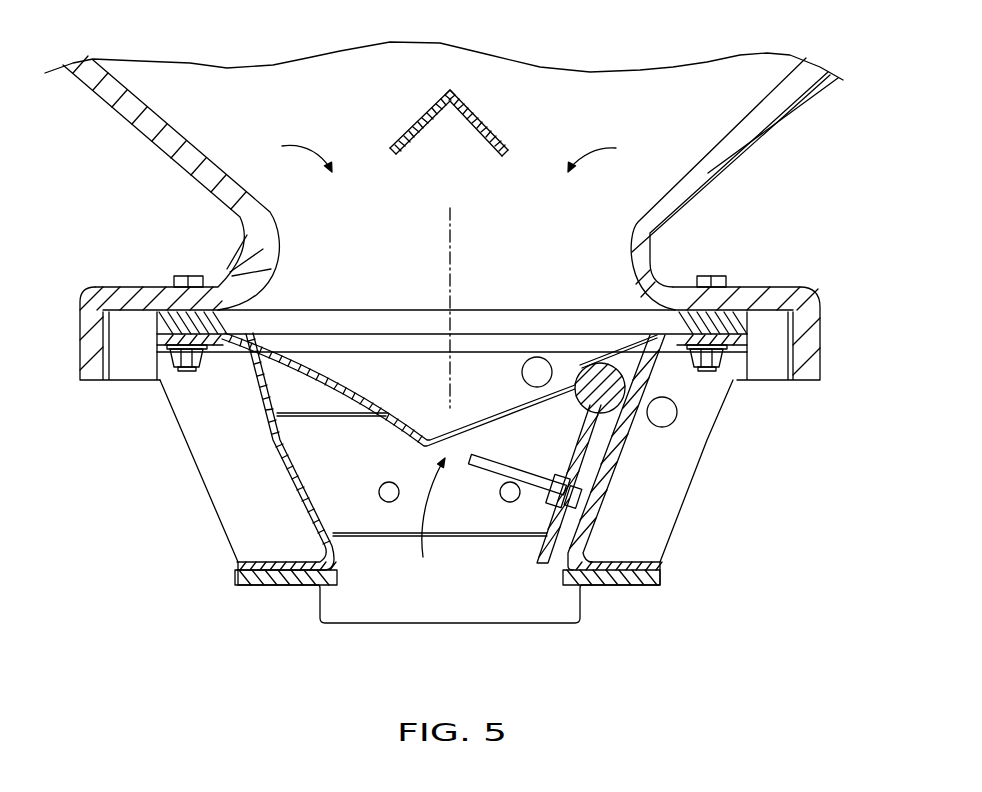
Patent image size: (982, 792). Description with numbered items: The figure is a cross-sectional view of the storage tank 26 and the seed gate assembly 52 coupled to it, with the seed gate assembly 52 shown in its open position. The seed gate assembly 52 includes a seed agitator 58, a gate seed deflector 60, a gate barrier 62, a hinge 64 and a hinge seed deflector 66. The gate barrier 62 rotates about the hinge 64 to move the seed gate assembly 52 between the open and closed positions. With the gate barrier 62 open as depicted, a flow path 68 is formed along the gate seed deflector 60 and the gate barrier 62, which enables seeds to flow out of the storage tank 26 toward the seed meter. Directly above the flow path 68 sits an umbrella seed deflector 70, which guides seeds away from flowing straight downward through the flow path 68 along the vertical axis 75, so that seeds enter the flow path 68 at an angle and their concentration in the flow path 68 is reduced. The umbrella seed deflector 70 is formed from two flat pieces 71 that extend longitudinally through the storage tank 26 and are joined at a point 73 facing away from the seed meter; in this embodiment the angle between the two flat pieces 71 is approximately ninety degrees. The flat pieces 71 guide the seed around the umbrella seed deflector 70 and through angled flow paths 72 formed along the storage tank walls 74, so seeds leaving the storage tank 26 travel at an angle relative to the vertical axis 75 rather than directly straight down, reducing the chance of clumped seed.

The storage tank 26 is at (153, 148).
The seed gate assembly 52 is at (196, 460).
The seed agitator 58 is at (490, 474).
The gate seed deflector 60 is at (280, 348).
The gate barrier 62 is at (572, 467).
The hinge 64 is at (590, 386).
The hinge seed deflector 66 is at (640, 355).
The flow path 68 is at (427, 523).
The umbrella seed deflector 70 is at (453, 129).
The flat pieces 71 is at (407, 133).
The angled flow paths 72 is at (450, 153).
The point 73 is at (458, 94).
The storage tank walls 74 is at (175, 130).
The vertical axis 75 is at (448, 248).